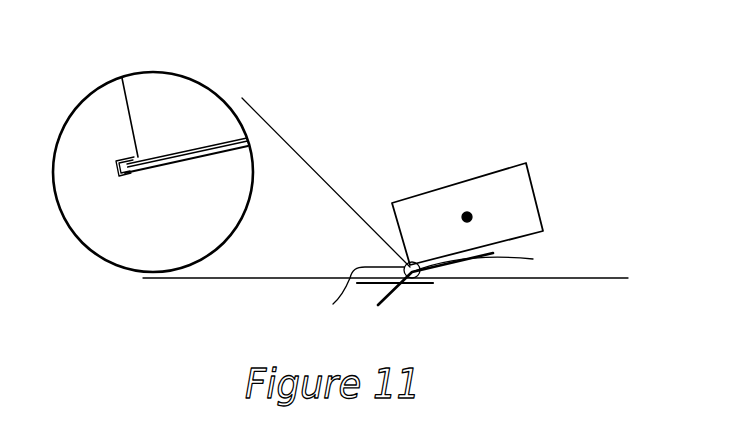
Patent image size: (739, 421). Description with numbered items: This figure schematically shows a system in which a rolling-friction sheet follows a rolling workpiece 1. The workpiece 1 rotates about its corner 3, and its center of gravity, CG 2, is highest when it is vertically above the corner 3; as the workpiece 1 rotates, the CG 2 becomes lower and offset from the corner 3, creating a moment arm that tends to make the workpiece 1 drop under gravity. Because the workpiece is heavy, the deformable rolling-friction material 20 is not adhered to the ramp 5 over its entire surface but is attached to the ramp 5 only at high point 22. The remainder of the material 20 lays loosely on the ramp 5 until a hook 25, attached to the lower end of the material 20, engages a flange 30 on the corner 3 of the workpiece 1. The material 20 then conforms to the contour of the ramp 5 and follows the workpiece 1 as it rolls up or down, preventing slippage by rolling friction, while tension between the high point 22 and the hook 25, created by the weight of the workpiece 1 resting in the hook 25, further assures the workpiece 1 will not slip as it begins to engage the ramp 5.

The workpiece 1 is at (531, 182).
The CG 2 is at (470, 216).
The corner 3 is at (96, 128).
The ramp 5 is at (423, 278).
The material 20 is at (413, 280).
The high point 22 is at (490, 257).
The hook 25 is at (119, 176).
The flange 30 is at (121, 167).